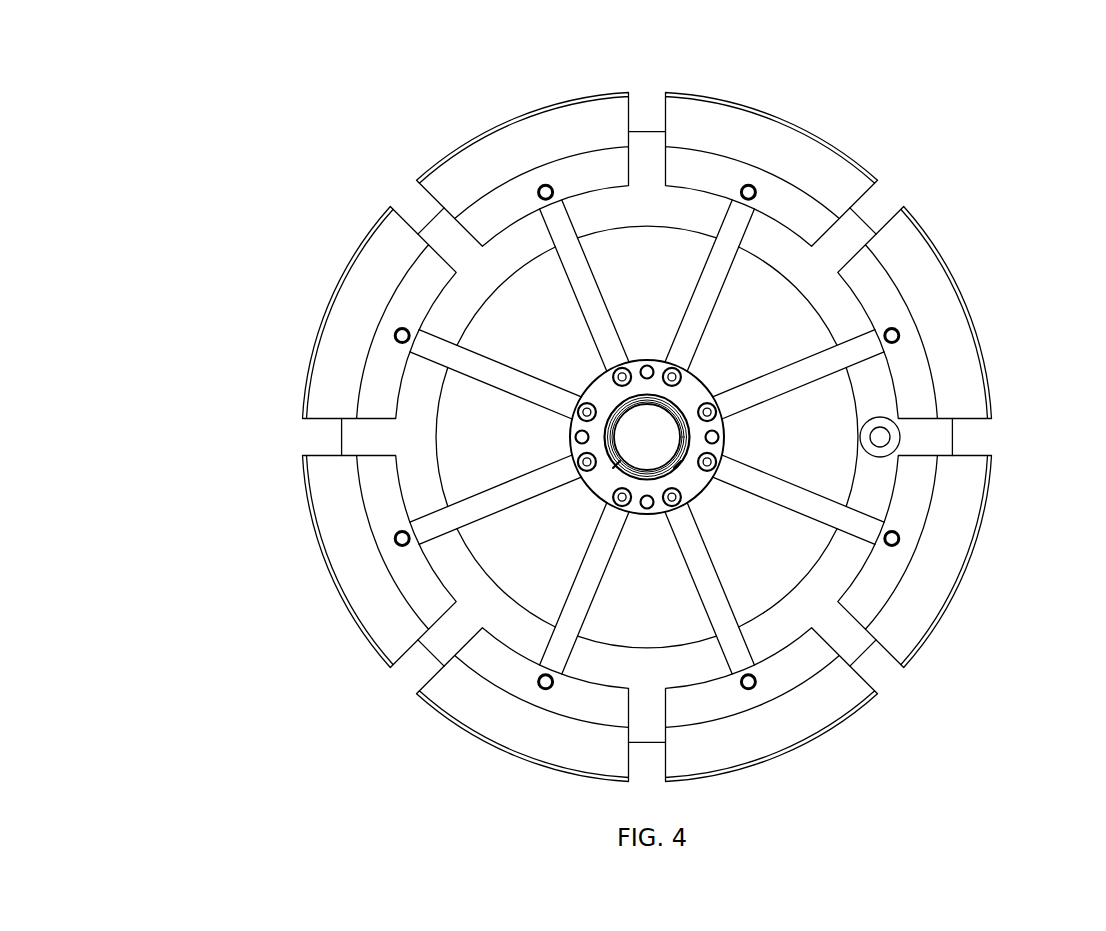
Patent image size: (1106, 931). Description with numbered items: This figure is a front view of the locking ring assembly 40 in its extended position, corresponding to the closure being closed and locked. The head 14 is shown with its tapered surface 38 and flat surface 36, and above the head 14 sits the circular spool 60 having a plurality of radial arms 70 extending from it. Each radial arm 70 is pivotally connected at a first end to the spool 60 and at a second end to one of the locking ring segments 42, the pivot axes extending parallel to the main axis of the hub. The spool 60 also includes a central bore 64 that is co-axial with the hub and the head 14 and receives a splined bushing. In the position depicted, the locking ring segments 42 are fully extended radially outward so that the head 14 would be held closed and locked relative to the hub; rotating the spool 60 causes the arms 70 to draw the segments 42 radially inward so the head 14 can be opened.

The locking ring assembly 40 is at (985, 145).
The locking ring segments 42 is at (484, 117).
The head 14 is at (850, 237).
The tapered surface 38 is at (453, 299).
The flat surface 36 is at (501, 337).
The radial arms 70 is at (705, 303).
The spool 60 is at (708, 364).
The central bore 64 is at (607, 463).